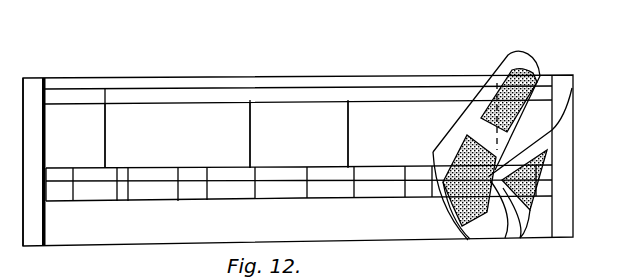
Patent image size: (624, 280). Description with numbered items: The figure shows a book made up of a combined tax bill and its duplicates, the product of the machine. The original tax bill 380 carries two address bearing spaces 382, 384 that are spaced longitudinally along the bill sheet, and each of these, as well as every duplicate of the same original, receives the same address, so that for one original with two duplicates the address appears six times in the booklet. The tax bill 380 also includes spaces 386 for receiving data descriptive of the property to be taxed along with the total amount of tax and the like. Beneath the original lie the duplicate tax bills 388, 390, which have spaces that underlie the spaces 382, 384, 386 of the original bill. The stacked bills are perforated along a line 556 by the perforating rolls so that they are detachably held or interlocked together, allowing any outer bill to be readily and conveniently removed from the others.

The tax bill 380 is at (363, 75).
The address bearing space 382 is at (177, 110).
The address bearing space 384 is at (428, 110).
The spaces for data 386 is at (157, 193).
The duplicate tax bill 388 is at (561, 80).
The duplicate tax bill 390 is at (563, 192).
The perforation line 556 is at (42, 78).